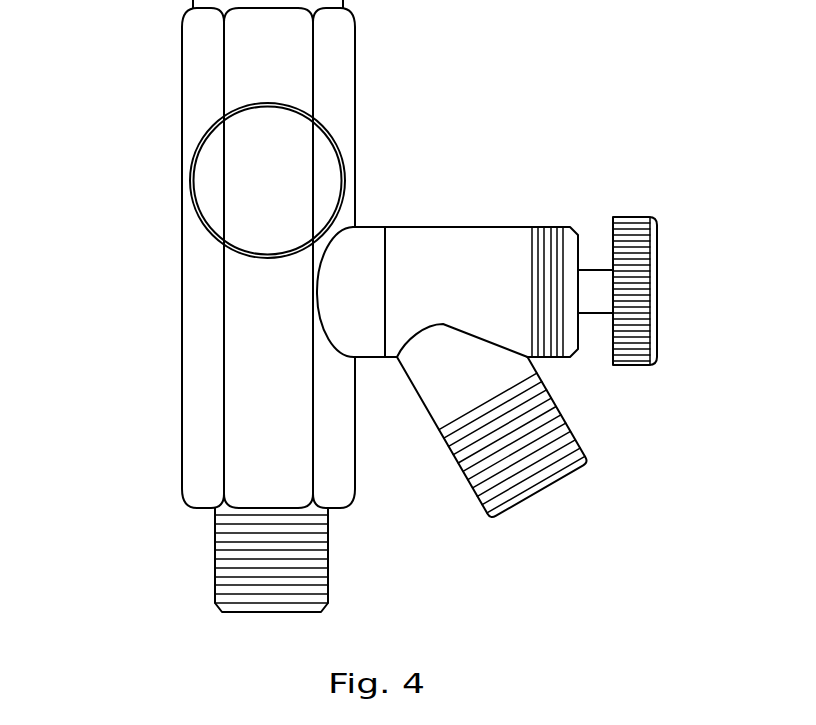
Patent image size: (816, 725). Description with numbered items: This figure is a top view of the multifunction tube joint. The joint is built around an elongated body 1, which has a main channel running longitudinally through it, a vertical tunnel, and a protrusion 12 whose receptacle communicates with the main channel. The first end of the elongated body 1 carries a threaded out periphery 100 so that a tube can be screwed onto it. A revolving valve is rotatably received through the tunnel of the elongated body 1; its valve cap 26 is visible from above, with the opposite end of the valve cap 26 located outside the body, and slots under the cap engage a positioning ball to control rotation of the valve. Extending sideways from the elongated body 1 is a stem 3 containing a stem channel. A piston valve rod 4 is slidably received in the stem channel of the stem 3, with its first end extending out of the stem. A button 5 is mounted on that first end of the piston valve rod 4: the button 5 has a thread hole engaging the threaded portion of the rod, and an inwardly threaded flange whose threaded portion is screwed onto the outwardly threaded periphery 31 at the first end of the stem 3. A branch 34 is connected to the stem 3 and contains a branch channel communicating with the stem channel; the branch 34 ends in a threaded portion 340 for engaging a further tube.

The elongated body 1 is at (203, 305).
The valve cap 26 is at (222, 172).
The threaded out periphery 100 is at (315, 585).
The protrusion 12 is at (363, 243).
The stem 3 is at (480, 245).
The outwardly threaded periphery 31 is at (558, 305).
The piston valve rod 4 is at (597, 278).
The button 5 is at (638, 218).
The branch 34 is at (445, 397).
The threaded portion 340 is at (577, 457).